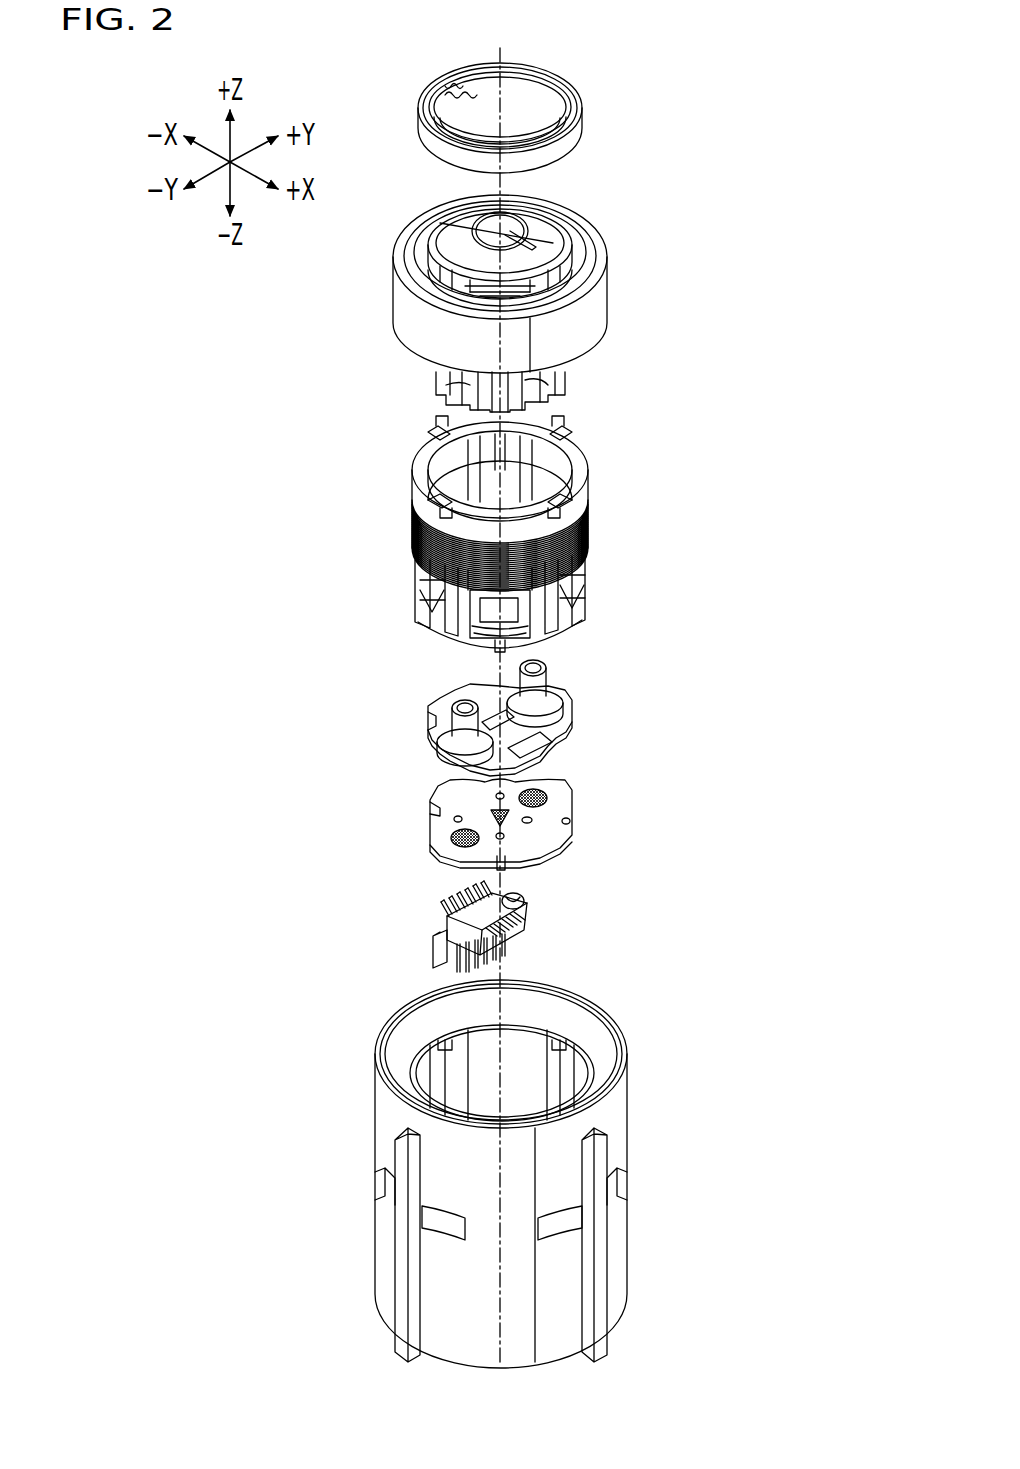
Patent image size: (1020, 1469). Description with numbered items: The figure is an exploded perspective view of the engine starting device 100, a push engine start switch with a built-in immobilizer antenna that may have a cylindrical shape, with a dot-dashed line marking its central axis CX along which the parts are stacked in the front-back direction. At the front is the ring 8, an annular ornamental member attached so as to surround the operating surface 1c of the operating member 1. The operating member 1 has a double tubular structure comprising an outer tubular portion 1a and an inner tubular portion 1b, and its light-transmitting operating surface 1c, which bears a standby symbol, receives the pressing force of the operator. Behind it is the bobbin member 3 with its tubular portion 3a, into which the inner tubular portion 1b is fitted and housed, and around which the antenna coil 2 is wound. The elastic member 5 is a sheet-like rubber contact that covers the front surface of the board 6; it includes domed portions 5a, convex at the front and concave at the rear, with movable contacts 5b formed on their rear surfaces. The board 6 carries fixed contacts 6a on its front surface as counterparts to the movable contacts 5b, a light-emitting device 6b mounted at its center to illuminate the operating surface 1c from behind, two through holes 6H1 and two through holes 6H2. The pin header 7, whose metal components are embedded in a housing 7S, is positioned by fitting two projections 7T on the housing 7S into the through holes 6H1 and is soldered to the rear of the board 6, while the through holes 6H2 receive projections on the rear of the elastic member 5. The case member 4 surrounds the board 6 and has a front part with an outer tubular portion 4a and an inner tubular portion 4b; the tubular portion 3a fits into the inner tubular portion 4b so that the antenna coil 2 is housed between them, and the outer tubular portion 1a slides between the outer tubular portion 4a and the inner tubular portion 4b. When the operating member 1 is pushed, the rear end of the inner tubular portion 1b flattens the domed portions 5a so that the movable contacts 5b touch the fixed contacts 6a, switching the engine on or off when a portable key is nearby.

The engine starting device 100 is at (736, 120).
The central axis CX is at (500, 50).
The ring 8 is at (596, 102).
The operating member 1 is at (596, 222).
The outer tubular portion 1a is at (596, 320).
The inner tubular portion 1b is at (466, 390).
The operating surface 1c is at (456, 213).
The bobbin member 3 is at (596, 462).
The tubular portion 3a is at (420, 482).
The antenna coil 2 is at (592, 516).
The elastic member 5 is at (598, 668).
The domed portions 5a is at (440, 704).
The movable contacts 5b is at (548, 698).
The board 6 is at (588, 786).
The fixed contacts 6a is at (452, 838).
The light-emitting device 6b is at (530, 820).
The through holes 6H1 is at (495, 797).
The through holes 6H2 is at (566, 822).
The pin header 7 is at (542, 906).
The projections 7T is at (496, 906).
The housing 7S is at (452, 942).
The case member 4 is at (642, 1088).
The outer tubular portion 4a is at (592, 1010).
The inner tubular portion 4b is at (450, 1044).